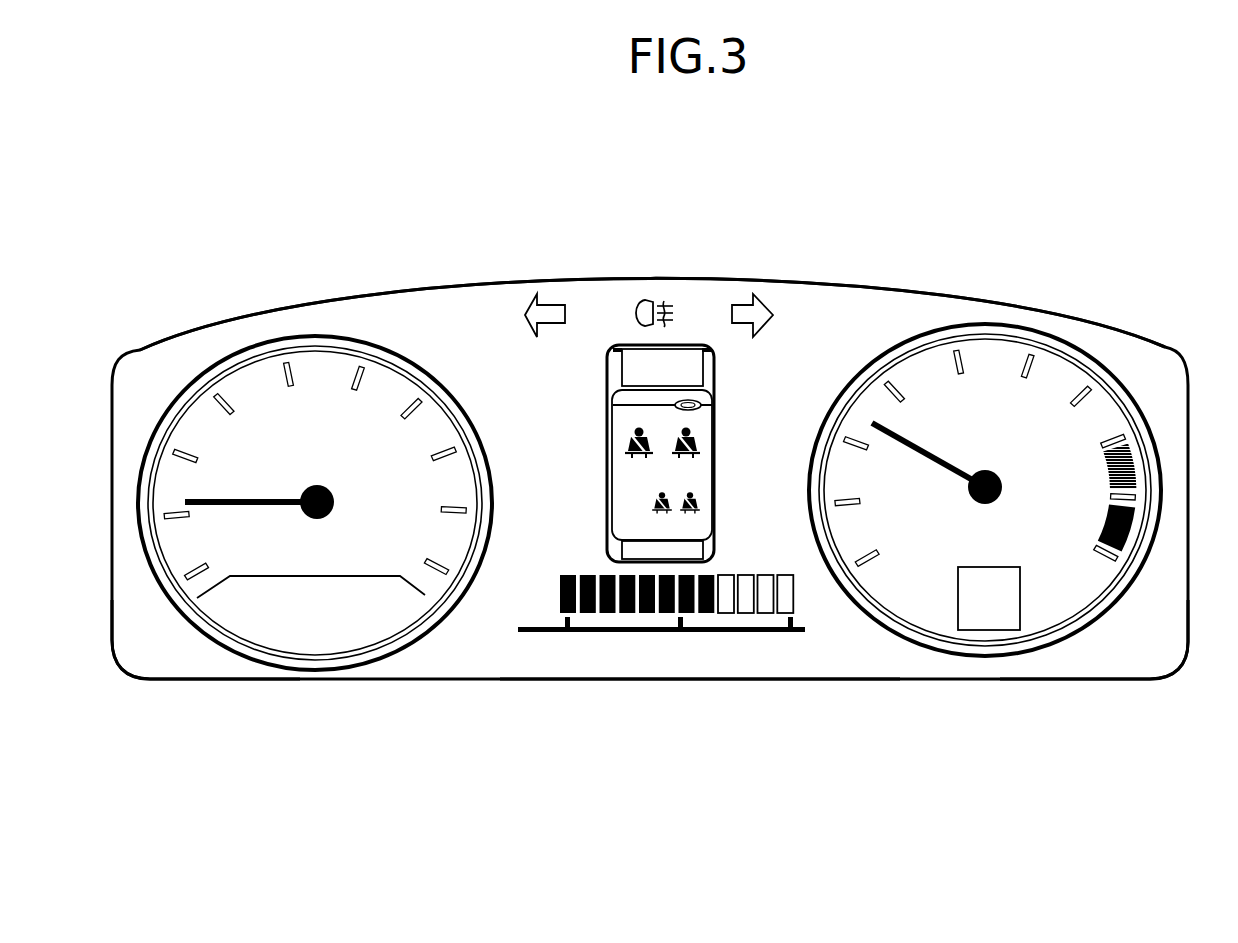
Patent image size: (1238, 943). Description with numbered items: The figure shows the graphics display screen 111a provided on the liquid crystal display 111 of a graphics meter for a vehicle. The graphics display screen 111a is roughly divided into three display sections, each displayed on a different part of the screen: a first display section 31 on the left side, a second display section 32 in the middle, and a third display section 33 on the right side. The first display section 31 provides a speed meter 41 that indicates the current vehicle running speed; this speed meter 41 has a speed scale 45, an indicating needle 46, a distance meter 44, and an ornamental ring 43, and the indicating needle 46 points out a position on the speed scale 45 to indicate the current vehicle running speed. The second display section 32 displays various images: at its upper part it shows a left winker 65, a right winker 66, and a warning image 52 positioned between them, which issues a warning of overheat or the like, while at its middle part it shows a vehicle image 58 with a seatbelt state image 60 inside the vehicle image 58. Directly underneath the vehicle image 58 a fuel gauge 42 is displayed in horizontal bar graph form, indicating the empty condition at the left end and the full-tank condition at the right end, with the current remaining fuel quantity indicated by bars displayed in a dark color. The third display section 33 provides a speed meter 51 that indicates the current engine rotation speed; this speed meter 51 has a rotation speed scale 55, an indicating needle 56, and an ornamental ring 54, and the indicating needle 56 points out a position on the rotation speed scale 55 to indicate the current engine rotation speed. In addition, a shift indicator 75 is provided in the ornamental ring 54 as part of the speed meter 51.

The liquid crystal display 111 is at (428, 287).
The graphics display screen 111a is at (910, 290).
The first display section 31 is at (190, 653).
The second display section 32 is at (722, 667).
The third display section 33 is at (1123, 655).
The speed meter 41 is at (290, 453).
The ornamental ring 43 is at (165, 595).
The distance meter 44 is at (378, 615).
The speed scale 45 is at (205, 395).
The indicating needle 46 is at (185, 498).
The speed meter 51 is at (1022, 482).
The ornamental ring 54 is at (1143, 565).
The rotation speed scale 55 is at (1093, 390).
The indicating needle 56 is at (930, 440).
The shift indicator 75 is at (965, 620).
The fuel gauge 42 is at (745, 577).
The warning image 52 is at (647, 298).
The vehicle image 58 is at (717, 425).
The seatbelt state image 60 is at (595, 432).
The left winker 65 is at (557, 297).
The right winker 66 is at (730, 297).